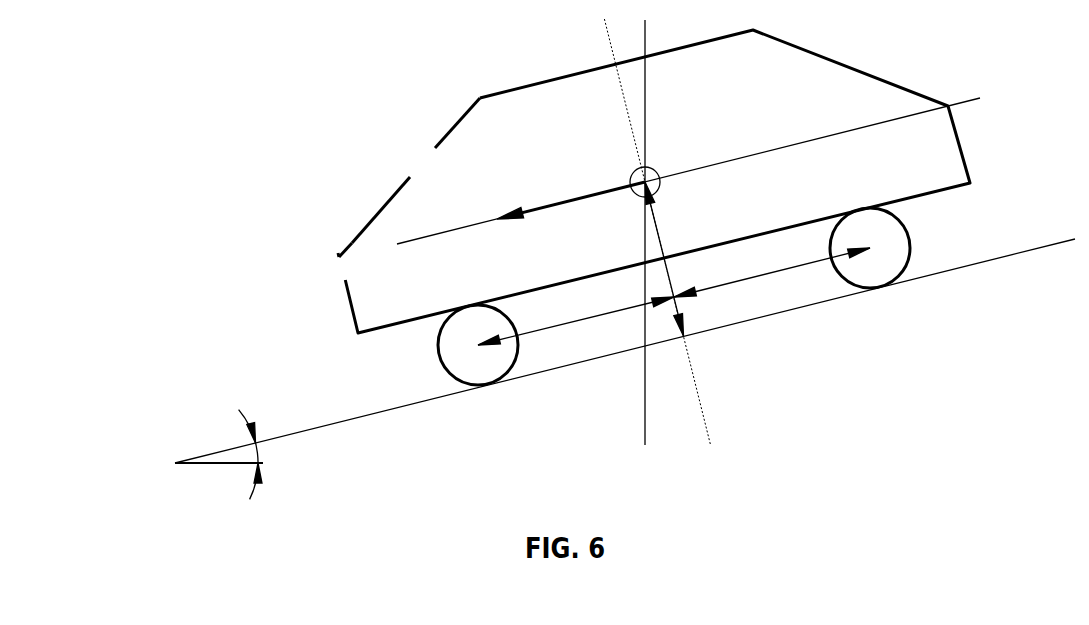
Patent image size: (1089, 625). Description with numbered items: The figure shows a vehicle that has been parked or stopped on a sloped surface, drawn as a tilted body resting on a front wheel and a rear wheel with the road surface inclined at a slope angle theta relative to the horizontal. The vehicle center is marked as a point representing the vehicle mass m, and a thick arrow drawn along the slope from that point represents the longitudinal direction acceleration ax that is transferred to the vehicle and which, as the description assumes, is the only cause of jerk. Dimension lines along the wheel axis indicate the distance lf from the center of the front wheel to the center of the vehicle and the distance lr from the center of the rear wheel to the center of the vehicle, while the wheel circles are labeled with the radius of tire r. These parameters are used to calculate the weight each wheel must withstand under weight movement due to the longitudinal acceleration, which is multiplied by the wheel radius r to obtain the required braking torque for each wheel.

The mass of a vehicle m is at (534, 173).
The longitudinal direction acceleration ax is at (351, 231).
The radius of the wheel r is at (362, 345).
The distance from the center of the front wheel to the center of the vehicle lf is at (576, 327).
The distance from the center of the rear wheel to the center of the vehicle lr is at (772, 278).
The road slope angle theta is at (229, 455).